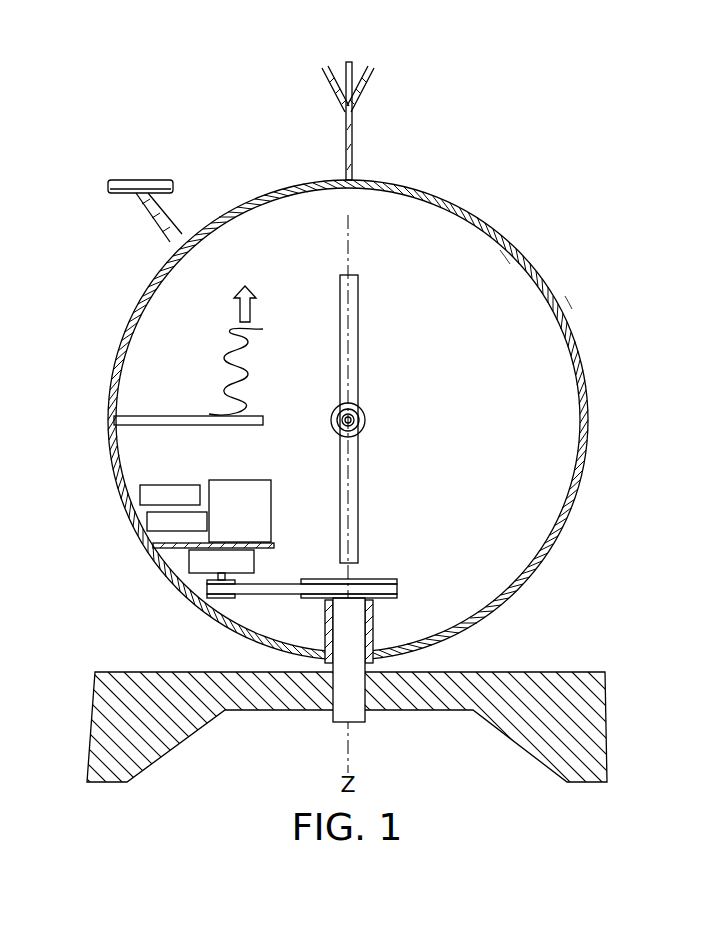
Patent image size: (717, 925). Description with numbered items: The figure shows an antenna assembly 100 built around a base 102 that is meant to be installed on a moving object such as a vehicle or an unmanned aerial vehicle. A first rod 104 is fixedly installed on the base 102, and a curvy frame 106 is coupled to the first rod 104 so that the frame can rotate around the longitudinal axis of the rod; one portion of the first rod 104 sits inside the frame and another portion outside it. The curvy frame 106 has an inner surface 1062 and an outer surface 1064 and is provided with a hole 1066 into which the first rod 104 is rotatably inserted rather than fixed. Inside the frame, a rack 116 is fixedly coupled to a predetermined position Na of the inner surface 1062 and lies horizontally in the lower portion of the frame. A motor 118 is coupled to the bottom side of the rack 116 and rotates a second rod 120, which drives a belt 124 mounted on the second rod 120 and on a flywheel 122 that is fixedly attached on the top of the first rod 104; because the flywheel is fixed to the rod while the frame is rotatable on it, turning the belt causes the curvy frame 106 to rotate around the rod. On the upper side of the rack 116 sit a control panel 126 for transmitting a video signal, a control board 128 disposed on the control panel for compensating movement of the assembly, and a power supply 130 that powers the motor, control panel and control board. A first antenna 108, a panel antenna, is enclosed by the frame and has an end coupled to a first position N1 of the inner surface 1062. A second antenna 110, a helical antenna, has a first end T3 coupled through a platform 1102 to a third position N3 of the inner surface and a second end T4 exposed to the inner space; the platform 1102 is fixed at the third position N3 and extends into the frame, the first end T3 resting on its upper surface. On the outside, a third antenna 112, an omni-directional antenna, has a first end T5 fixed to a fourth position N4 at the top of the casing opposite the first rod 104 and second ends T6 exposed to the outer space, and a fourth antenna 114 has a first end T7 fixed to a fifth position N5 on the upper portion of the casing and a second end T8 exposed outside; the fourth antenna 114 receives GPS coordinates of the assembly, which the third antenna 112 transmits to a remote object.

The antenna assembly 100 is at (610, 65).
The base 102 is at (592, 722).
The first rod 104 is at (358, 718).
The curvy frame 106 is at (482, 226).
The inner surface 1062 is at (511, 262).
The outer surface 1064 is at (573, 307).
The hole 1066 is at (355, 638).
The first antenna 108 is at (359, 487).
The second antenna 110 is at (246, 350).
The platform 1102 is at (152, 418).
The third antenna 112 is at (353, 125).
The fourth antenna 114 is at (143, 187).
The rack 116 is at (180, 556).
The motor 118 is at (218, 576).
The second rod 120 is at (220, 596).
The flywheel 122 is at (386, 580).
The belt 124 is at (288, 596).
The control panel 126 is at (155, 525).
The control board 128 is at (148, 498).
The power supply 130 is at (230, 490).
The first position N1 is at (366, 420).
The third position N3 is at (118, 420).
The fourth position N4 is at (343, 178).
The fifth position N5 is at (187, 232).
The predetermined position Na is at (150, 545).
The first end of the second antenna T3 is at (203, 412).
The second end of the second antenna T4 is at (268, 322).
The first end of the third antenna T5 is at (357, 178).
The second end of the third antenna T6 is at (372, 76).
The first end of the fourth antenna T7 is at (170, 249).
The second end of the fourth antenna T8 is at (103, 173).